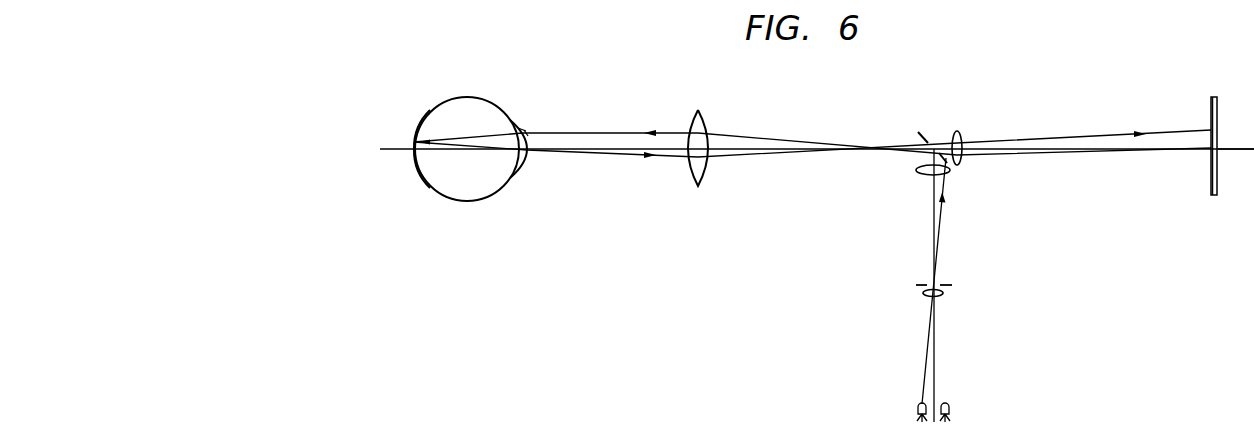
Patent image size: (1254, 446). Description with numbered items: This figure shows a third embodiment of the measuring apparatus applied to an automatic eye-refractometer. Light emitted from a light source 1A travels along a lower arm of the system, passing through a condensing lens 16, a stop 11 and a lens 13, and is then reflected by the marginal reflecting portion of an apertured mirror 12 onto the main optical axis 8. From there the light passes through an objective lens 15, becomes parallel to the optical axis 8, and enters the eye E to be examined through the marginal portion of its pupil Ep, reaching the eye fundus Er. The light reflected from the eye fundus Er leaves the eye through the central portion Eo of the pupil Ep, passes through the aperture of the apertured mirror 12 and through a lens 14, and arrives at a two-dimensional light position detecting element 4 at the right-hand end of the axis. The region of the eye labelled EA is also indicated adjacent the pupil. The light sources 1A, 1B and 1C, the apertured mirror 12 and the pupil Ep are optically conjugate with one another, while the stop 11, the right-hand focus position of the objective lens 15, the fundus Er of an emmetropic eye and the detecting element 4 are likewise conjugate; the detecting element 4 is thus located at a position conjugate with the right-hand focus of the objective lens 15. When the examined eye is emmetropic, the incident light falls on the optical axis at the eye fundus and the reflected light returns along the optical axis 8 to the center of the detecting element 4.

The eye to be examined E is at (509, 117).
The eye fundus Er is at (430, 110).
The pupil EP is at (522, 128).
The anterior chamber / crystalline lens of the eye EA is at (527, 132).
The central portion of the pupil EO is at (527, 158).
The objective lens 15 is at (703, 122).
The apertured mirror 12 is at (924, 129).
The lens 13 is at (925, 177).
The lens 14 is at (960, 133).
The two-dimensional light position detecting element 4 is at (1218, 120).
The optical axis 8 is at (1233, 149).
The stop 11 is at (918, 290).
The condensing lens 16 is at (941, 294).
The light source 1A is at (918, 403).
The light source 1B is at (950, 403).
The light source 1C is at (945, 412).